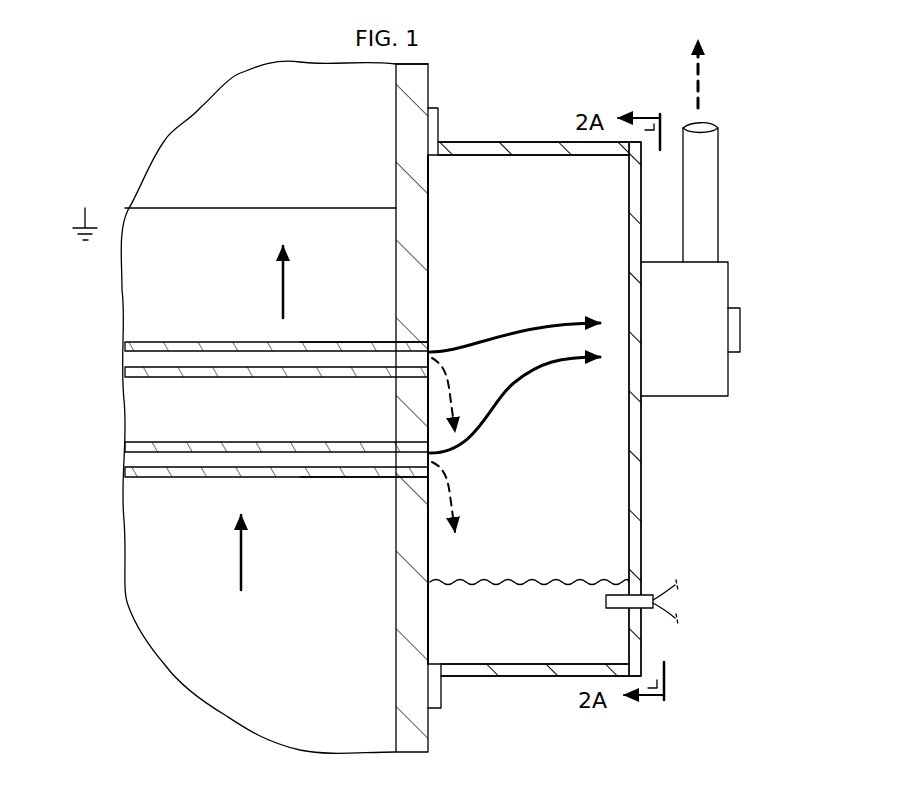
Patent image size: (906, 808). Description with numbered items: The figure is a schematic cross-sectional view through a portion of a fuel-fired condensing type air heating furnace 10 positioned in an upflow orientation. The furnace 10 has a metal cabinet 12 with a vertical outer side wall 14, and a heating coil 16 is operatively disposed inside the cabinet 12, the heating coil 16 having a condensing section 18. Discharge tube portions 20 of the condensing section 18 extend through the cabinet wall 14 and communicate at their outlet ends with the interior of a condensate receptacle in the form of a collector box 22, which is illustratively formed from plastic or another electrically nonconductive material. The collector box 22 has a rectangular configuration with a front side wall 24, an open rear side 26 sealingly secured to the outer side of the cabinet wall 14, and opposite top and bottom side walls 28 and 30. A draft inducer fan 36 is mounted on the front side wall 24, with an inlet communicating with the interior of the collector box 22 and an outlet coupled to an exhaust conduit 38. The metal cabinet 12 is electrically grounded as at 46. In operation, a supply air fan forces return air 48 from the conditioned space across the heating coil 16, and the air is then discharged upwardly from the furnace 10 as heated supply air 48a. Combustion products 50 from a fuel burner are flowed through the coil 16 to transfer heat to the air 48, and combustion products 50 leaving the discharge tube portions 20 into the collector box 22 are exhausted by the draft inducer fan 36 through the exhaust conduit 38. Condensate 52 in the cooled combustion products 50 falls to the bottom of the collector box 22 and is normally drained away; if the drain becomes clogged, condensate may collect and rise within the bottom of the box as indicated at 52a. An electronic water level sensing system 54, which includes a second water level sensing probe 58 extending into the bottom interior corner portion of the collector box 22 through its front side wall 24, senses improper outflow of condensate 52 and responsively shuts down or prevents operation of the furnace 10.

The furnace 10 is at (220, 60).
The metal cabinet 12 is at (226, 724).
The vertical outer side wall 14 is at (430, 730).
The heating coil 16 is at (188, 330).
The condensing section 18 is at (178, 482).
The discharge tube portions 20 is at (345, 340).
The collector box 22 is at (516, 138).
The front side wall 24 is at (642, 462).
The open rear side 26 is at (402, 278).
The top side wall 28 is at (492, 141).
The bottom side wall 30 is at (540, 678).
The draft inducer fan 36 is at (730, 285).
The exhaust conduit 38 is at (719, 163).
The electrical ground 46 is at (80, 222).
The return air 48 is at (245, 555).
The heated supply air 48a is at (276, 290).
The combustion products 50 is at (500, 334).
The condensate 52 is at (452, 380).
The collected condensate 52a is at (547, 581).
The electronic water level sensing system 54 is at (690, 602).
The second water level sensing probe 58 is at (603, 602).